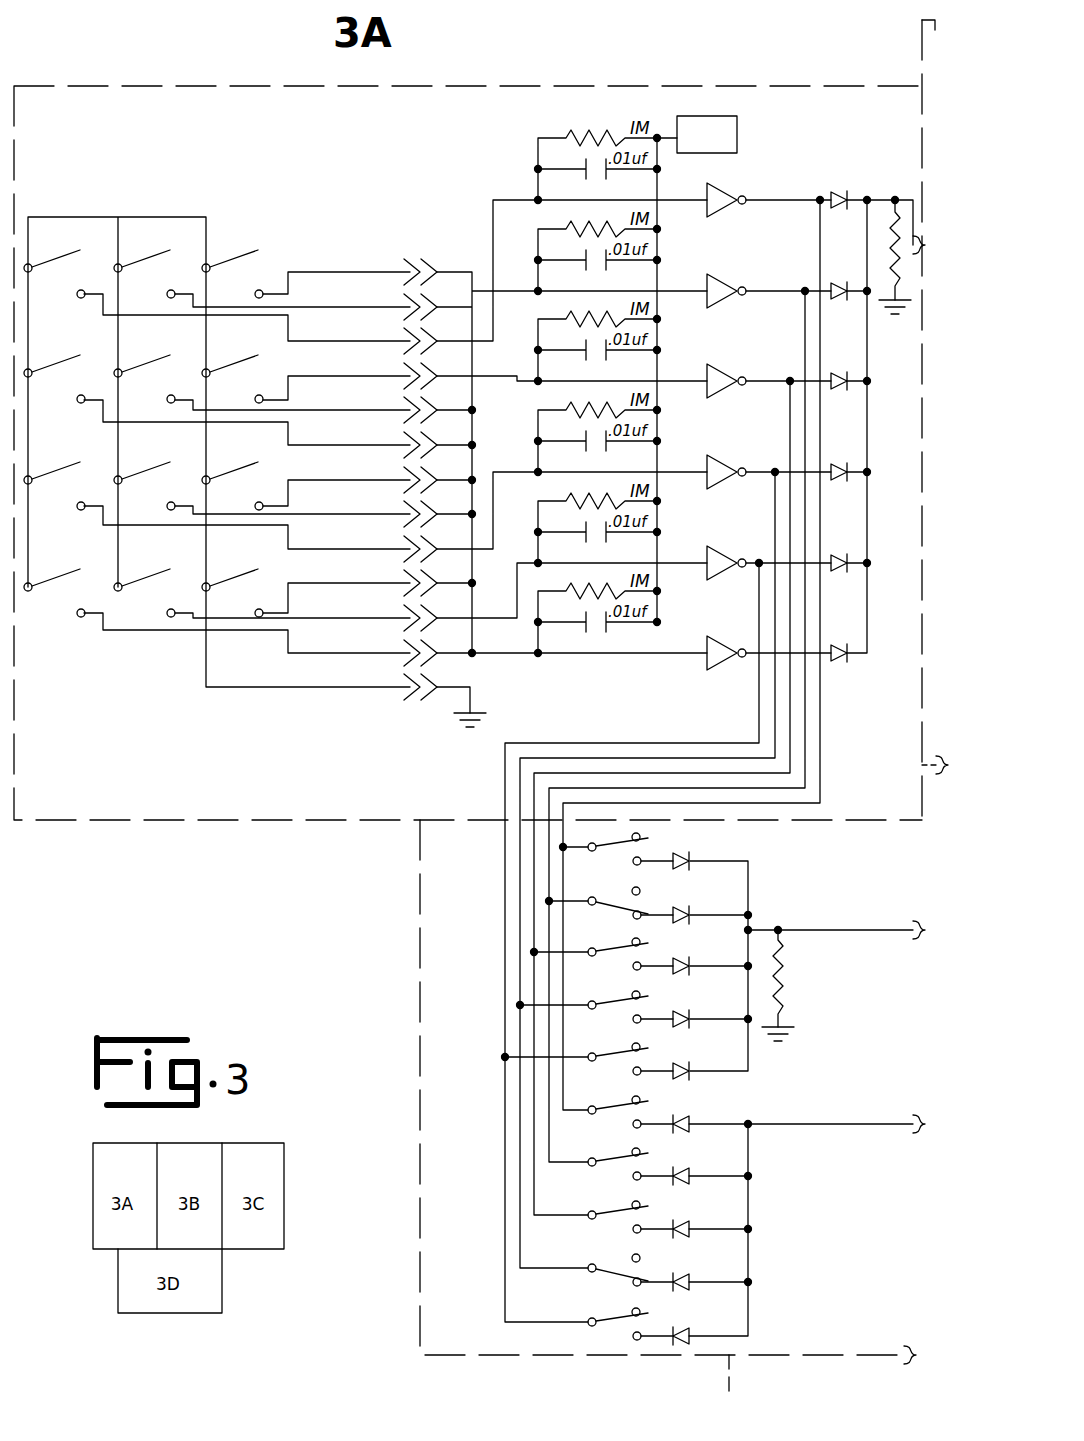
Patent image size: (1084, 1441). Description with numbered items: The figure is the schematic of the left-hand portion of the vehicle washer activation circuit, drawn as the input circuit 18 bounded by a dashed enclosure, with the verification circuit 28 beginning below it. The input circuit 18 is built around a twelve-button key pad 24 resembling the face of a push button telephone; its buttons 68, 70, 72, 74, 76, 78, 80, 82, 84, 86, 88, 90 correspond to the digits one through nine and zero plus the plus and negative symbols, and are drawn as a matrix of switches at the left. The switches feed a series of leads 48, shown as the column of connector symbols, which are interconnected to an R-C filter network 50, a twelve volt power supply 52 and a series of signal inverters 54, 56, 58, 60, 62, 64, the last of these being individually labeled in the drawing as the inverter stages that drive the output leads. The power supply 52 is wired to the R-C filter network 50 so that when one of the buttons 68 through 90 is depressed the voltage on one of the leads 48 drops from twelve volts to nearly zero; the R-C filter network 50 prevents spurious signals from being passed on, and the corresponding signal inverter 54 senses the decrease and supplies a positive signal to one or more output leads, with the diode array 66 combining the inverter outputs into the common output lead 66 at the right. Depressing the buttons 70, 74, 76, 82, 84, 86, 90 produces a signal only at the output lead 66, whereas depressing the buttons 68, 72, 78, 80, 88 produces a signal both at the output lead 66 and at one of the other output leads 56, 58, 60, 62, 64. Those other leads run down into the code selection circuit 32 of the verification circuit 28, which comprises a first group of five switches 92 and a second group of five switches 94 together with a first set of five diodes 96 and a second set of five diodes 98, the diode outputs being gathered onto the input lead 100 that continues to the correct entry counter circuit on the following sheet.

The input circuit 18 is at (99, 84).
The key pad 24 is at (217, 418).
The verification circuit 28 is at (420, 998).
The code selection circuit 32 is at (714, 1112).
The leads 48 is at (381, 243).
The R-C filter network 50 is at (600, 108).
The 12 volt power supply 52 is at (742, 124).
The signal inverters 54 is at (722, 676).
The output lead 56 is at (760, 200).
The output lead 58 is at (750, 291).
The output lead 60 is at (750, 381).
The output lead 62 is at (745, 472).
The output lead 64 is at (752, 558).
The output lead 66 is at (866, 532).
The button 68 is at (85, 268).
The button 70 is at (182, 268).
The button 72 is at (273, 270).
The button 74 is at (92, 373).
The button 76 is at (183, 370).
The button 78 is at (265, 374).
The button 80 is at (94, 479).
The button 82 is at (182, 478).
The button 84 is at (264, 476).
The button 86 is at (94, 586).
The button 88 is at (182, 590).
The button 90 is at (268, 590).
The first group of five switches 92 is at (662, 847).
The second group of five switches 94 is at (620, 1358).
The first set of five diodes 96 is at (700, 858).
The second set of five diodes 98 is at (685, 1358).
The input lead 100 is at (836, 1027).